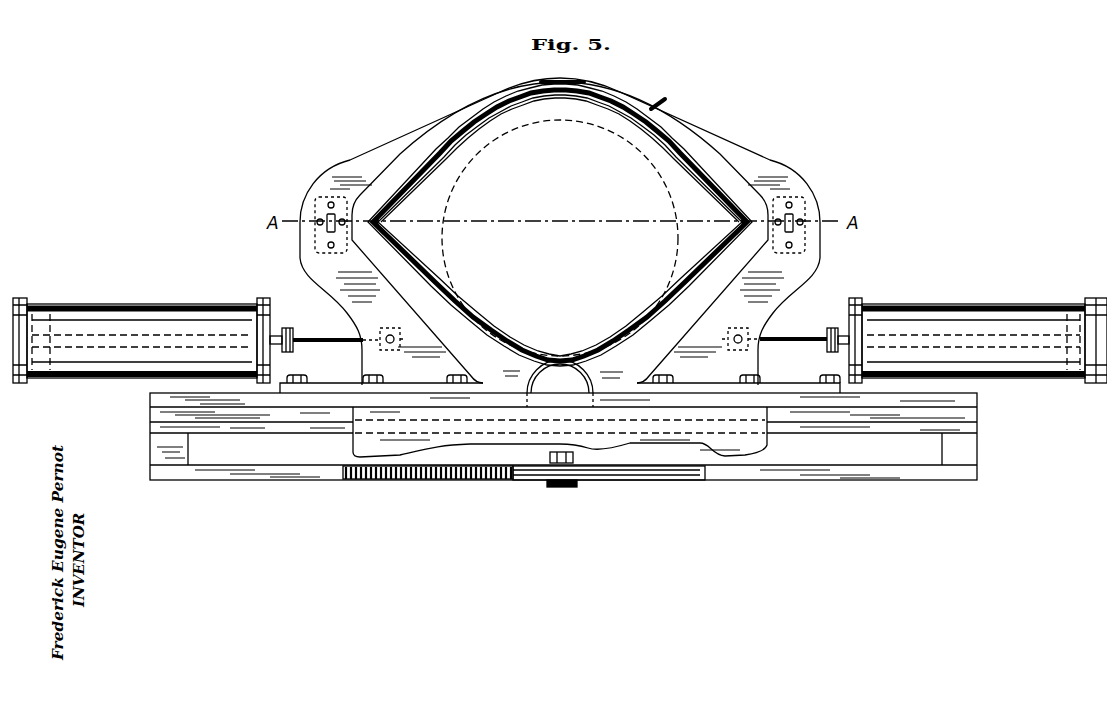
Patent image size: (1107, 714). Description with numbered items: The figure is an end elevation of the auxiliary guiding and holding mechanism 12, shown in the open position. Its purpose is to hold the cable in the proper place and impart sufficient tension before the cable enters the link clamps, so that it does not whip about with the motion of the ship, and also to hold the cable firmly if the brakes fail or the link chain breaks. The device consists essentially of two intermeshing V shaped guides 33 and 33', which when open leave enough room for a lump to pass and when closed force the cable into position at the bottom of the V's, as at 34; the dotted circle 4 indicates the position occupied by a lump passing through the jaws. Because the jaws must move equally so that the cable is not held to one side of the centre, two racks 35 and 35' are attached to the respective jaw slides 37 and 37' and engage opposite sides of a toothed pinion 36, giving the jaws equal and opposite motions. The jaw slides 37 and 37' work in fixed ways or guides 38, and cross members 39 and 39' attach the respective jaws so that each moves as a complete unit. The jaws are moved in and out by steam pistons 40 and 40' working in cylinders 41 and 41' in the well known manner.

The cylindrical body 4 is at (500, 140).
The mechanism 12 is at (560, 242).
The V shaped guide 33 is at (560, 224).
The V shaped guide 33' is at (560, 160).
The bottom of the V's 34 is at (378, 223).
The rack 35 is at (563, 489).
The rack 35' is at (610, 489).
The toothed pinion 36 is at (595, 487).
The jaw slide 37 is at (547, 420).
The jaw slide 37' is at (611, 439).
The fixed ways or guides 38 is at (731, 446).
The cross member 39 is at (153, 449).
The cross member 39' is at (981, 446).
The steam piston 40 is at (349, 331).
The steam piston 40' is at (774, 329).
The cylinder 41 is at (153, 330).
The cylinder 41' is at (967, 327).